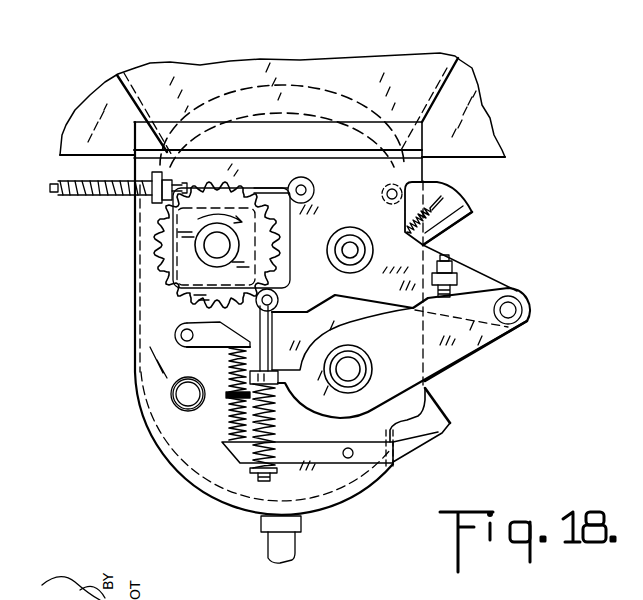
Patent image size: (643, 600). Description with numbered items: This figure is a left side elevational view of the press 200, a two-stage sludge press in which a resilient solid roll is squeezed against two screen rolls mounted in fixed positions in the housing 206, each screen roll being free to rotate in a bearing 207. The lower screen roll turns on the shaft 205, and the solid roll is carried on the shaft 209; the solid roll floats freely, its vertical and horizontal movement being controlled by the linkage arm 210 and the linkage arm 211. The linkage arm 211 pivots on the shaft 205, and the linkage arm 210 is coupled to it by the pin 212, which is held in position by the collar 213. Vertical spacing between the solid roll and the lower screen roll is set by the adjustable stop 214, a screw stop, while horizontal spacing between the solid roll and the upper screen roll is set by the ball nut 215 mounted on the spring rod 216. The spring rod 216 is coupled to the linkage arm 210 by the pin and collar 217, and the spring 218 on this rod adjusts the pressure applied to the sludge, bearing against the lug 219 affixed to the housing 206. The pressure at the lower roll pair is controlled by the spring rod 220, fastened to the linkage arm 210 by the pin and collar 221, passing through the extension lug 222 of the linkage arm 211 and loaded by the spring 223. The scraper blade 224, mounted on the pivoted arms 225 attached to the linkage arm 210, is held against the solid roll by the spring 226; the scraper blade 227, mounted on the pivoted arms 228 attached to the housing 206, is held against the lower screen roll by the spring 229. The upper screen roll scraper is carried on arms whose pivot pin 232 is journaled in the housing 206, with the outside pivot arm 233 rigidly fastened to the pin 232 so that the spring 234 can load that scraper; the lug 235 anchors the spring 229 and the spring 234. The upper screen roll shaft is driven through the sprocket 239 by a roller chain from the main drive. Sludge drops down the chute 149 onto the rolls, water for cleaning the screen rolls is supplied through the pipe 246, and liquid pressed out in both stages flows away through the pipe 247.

The chute 149 is at (441, 72).
The press 200 is at (237, 520).
The shaft 205 is at (353, 369).
The housing 206 is at (135, 385).
The bearing 207 is at (152, 282).
The shaft 209 is at (360, 252).
The linkage arm 210 is at (462, 268).
The linkage arm 211 is at (483, 345).
The pin 212 is at (515, 305).
The collar 213 is at (510, 325).
The adjustable stop 214 is at (447, 292).
The ball nut 215 is at (157, 172).
The spring rod 216 is at (262, 186).
The pin and collar 217 is at (305, 178).
The spring 218 is at (112, 197).
The lug 219 is at (134, 224).
The spring rod 220 is at (270, 340).
The pin and collar 221 is at (260, 305).
The extension lug 222 is at (288, 380).
The spring 223 is at (256, 470).
The scraper blade 224 is at (462, 222).
The pivoted arms 225 is at (437, 191).
The spring 226 is at (442, 210).
The scraper blade 227 is at (452, 418).
The pivoted arms 228 is at (418, 445).
The spring 229 is at (235, 428).
The pivot pin 232 is at (181, 330).
The outside pivot arm 233 is at (178, 345).
The spring 234 is at (228, 372).
The lug 235 is at (227, 397).
The sprocket 239 is at (158, 257).
The pipe 246 is at (173, 403).
The pipe 247 is at (298, 540).